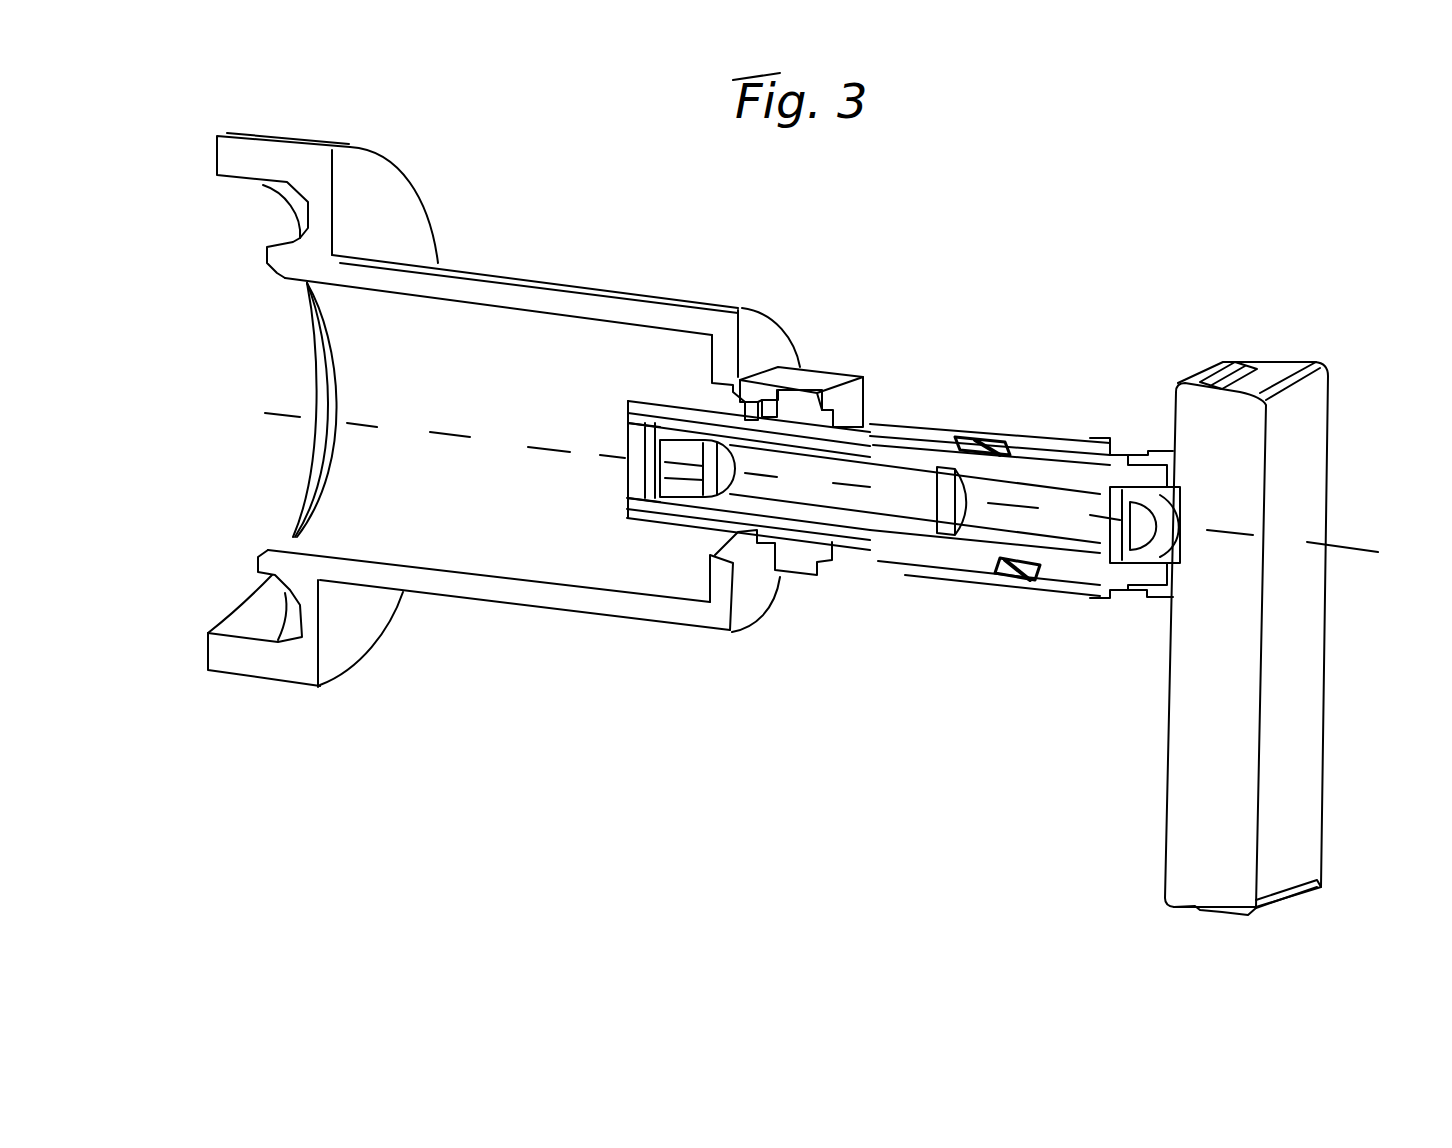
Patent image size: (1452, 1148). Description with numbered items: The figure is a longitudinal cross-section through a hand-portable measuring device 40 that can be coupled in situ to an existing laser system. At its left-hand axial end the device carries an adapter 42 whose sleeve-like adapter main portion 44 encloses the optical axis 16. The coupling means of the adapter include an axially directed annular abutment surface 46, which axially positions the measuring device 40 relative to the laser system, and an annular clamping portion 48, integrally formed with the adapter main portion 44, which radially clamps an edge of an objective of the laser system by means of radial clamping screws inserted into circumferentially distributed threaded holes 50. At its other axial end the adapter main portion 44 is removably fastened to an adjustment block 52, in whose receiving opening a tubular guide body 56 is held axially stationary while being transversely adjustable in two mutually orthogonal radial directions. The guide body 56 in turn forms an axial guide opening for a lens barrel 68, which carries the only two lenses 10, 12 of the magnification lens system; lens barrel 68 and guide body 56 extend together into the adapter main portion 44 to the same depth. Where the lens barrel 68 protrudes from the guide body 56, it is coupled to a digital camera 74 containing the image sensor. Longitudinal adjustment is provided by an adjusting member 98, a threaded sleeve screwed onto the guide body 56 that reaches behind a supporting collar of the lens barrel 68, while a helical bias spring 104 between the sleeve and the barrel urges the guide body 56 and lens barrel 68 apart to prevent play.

The lens 10 is at (688, 490).
The lens 12 is at (933, 498).
The optical axis 16 is at (445, 438).
The measuring device 40 is at (903, 508).
The adapter 42 is at (500, 273).
The adapter main portion 44 is at (527, 590).
The annular abutment surface 46 is at (255, 257).
The clamping portion 48 is at (273, 665).
The threaded holes 50 is at (283, 588).
The adjustment block 52 is at (843, 374).
The guide body 56 is at (642, 410).
The lens barrel 68 is at (858, 545).
The digital camera 74 is at (1318, 365).
The adjusting member 98 is at (950, 418).
The bias spring 104 is at (1047, 577).